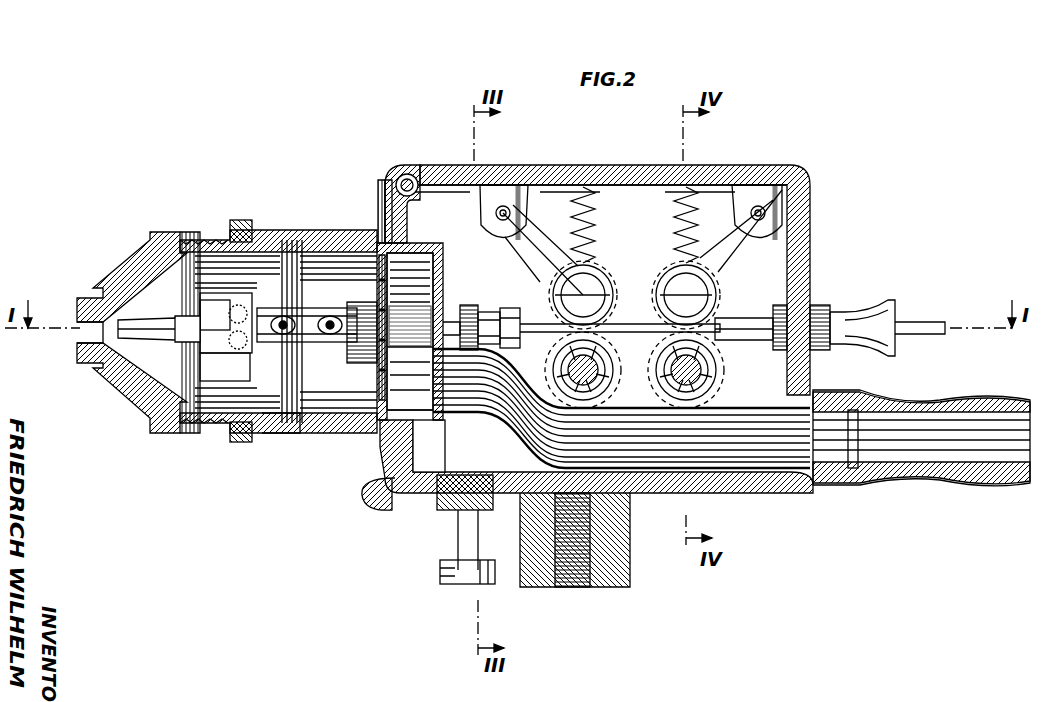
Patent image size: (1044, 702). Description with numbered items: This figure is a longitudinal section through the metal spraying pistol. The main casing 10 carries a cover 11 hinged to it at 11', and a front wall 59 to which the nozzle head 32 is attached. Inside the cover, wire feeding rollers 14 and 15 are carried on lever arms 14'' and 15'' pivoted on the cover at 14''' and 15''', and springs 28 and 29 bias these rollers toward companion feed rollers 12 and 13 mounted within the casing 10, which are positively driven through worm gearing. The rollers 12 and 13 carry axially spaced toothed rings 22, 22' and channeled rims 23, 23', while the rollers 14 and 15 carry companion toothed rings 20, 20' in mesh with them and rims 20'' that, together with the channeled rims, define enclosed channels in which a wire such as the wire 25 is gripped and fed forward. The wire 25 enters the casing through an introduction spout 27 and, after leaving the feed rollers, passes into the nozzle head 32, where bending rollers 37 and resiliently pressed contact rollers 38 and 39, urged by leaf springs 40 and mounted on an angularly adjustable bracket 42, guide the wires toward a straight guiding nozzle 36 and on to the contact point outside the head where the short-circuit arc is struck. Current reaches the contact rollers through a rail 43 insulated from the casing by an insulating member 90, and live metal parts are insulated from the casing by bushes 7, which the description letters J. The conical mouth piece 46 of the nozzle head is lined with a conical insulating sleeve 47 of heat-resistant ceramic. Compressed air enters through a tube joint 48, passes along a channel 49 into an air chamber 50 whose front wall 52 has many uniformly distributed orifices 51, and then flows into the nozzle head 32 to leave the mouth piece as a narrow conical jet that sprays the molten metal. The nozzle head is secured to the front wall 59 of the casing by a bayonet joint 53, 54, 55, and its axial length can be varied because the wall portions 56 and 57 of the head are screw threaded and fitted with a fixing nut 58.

The insulating bush 7 is at (466, 306).
The main casing 10 is at (742, 493).
The cover 11 is at (610, 268).
The hinge 11' is at (416, 163).
The feed roller 12 is at (548, 366).
The feed roller 13 is at (722, 372).
The wire feeding roller 14 is at (543, 260).
The lever arm 14'' is at (553, 208).
The pivot 14''' is at (503, 186).
The wire feeding roller 15 is at (744, 317).
The lever arm 15'' is at (780, 231).
The pivot 15''' is at (772, 186).
The toothed ring 20 is at (593, 273).
The toothed ring 20' is at (716, 288).
The rim 20'' is at (670, 289).
The toothed ring 22 is at (621, 408).
The toothed ring 22' is at (763, 387).
The channeled rim 23 is at (621, 326).
The channeled rim 23' is at (766, 349).
The metal wire 25 is at (928, 326).
The introduction spout 27 is at (868, 316).
The spring 28 is at (596, 214).
The spring 29 is at (699, 216).
The nozzle head 32 is at (322, 240).
The straight guiding nozzle 36 is at (92, 346).
The bending roller 37 is at (276, 340).
The contact roller 38 is at (226, 335).
The contact roller 39 is at (240, 300).
The leaf spring 40 is at (228, 268).
The bracket 42 is at (358, 352).
The current supply rail 43 is at (465, 530).
The conical mouth piece 46 is at (132, 270).
The conical insulating sleeve 47 is at (118, 380).
The tube joint 48 is at (958, 462).
The channel 49 is at (830, 440).
The air chamber 50 is at (442, 262).
The orifices 51 is at (398, 375).
The front wall 52 is at (380, 362).
The bayonet joint 53 is at (396, 180).
The bayonet joint 54 is at (388, 214).
The bayonet joint 55 is at (380, 192).
The screw threaded wall portion 56 is at (288, 434).
The screw threaded wall portion 57 is at (228, 436).
The fixing nut 58 is at (246, 222).
The front wall of casing 59 is at (410, 452).
The insulating member 90 is at (445, 508).